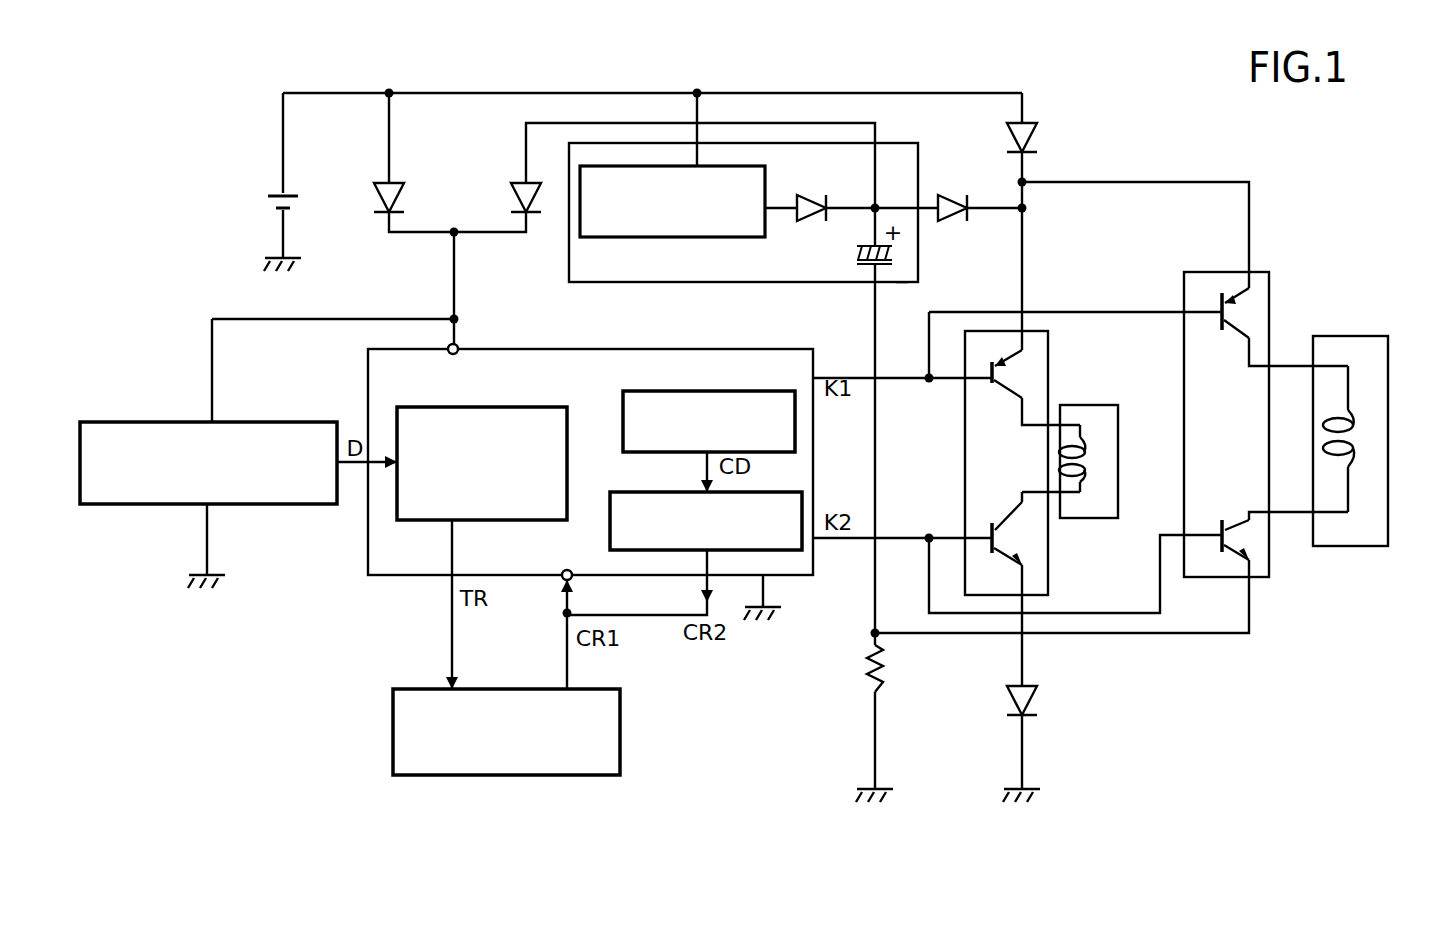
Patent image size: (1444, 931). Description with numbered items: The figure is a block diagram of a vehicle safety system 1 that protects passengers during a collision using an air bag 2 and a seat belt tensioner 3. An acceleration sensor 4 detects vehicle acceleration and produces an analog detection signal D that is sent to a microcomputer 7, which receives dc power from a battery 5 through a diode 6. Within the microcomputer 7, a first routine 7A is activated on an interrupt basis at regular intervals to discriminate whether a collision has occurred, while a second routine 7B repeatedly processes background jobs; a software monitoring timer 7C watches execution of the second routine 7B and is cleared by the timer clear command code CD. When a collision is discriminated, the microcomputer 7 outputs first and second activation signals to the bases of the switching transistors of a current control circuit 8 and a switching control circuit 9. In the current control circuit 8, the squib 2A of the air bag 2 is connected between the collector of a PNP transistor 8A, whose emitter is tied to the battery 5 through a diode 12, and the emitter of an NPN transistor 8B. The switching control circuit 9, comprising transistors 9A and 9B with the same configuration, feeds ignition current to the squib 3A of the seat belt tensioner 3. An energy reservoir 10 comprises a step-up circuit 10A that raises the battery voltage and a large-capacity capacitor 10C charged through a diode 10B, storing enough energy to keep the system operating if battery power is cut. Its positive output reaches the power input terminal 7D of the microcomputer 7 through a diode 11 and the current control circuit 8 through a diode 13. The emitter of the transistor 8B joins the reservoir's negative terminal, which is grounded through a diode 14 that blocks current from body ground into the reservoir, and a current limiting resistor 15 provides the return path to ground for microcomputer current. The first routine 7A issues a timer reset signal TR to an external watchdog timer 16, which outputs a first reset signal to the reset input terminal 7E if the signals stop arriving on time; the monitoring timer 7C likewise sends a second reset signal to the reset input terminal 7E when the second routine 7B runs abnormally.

The vehicle safety system 1 is at (1115, 147).
The air bag 2 is at (1098, 405).
The squib 2A is at (1090, 478).
The seat belt tensioner 3 is at (1340, 336).
The squib 3A is at (1355, 439).
The acceleration sensor 4 is at (153, 422).
The battery 5 is at (298, 197).
The diode 6 is at (395, 184).
The microcomputer 7 is at (550, 349).
The first routine 7A is at (565, 449).
The second routine 7B is at (766, 393).
The monitoring timer 7C is at (612, 538).
The power input terminal 7D is at (462, 345).
The reset input terminal 7E is at (564, 581).
The current control circuit 8 is at (1048, 364).
The PNP transistor 8A is at (994, 386).
The NPN transistor 8B is at (992, 522).
The switching control circuit 9 is at (1269, 285).
The transistor 9A is at (1218, 334).
The transistor 9B is at (1219, 520).
The energy reservoir 10 is at (672, 282).
The step-up circuit 10A is at (710, 237).
The diode 10B is at (797, 194).
The large-capacity capacitor 10C is at (855, 253).
The diode 11 is at (518, 179).
The diode 12 is at (1038, 135).
The diode 13 is at (941, 195).
The diode 14 is at (1007, 701).
The current limiting resistor 15 is at (883, 670).
The watchdog timer 16 is at (612, 723).